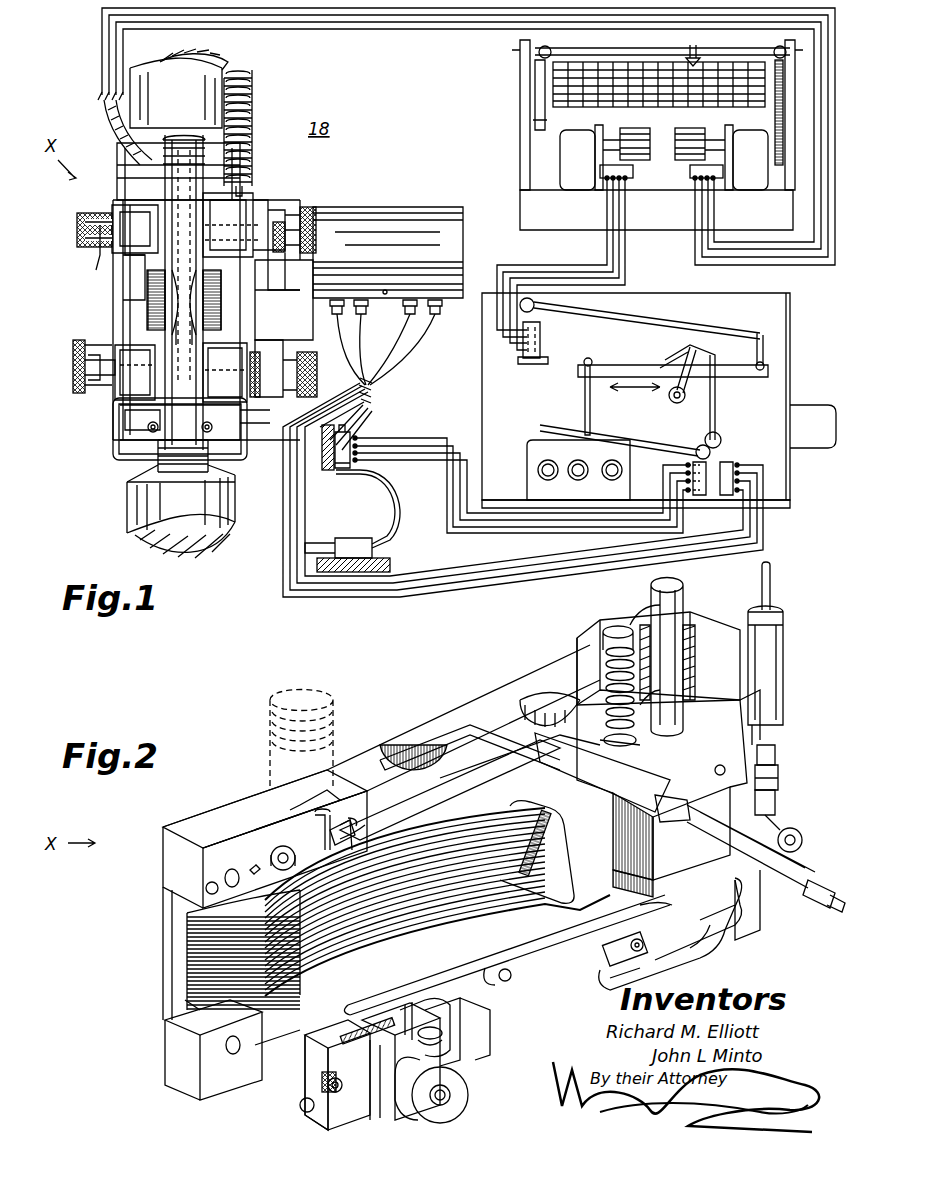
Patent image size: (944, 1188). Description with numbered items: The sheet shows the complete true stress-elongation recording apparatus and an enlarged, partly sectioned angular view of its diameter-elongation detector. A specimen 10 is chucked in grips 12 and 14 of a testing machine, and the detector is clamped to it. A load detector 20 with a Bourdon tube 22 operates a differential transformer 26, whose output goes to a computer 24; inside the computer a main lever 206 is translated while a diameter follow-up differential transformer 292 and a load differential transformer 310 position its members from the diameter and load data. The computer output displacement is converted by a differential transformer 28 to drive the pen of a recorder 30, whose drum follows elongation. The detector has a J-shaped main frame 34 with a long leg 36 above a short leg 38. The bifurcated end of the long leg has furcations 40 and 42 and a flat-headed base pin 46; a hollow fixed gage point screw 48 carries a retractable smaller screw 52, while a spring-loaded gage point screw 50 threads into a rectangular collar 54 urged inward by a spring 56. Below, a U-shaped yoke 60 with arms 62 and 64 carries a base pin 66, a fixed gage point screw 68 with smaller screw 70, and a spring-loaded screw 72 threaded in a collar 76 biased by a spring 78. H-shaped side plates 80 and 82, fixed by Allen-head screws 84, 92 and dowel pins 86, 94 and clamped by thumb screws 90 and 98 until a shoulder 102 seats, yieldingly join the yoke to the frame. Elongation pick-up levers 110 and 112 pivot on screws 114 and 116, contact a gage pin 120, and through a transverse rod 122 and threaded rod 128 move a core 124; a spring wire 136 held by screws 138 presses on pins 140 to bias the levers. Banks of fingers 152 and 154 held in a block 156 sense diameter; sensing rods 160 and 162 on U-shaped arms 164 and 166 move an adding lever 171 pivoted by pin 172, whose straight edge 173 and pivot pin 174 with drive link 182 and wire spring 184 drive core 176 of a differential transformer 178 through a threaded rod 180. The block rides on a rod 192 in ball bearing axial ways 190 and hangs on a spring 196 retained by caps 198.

In FIG. 1, the specimen 10 is at (165, 185).
In FIG. 1, the grip 12 is at (222, 64).
In FIG. 1, the grip 14 is at (210, 545).
In FIG. 1, the load detector 20 is at (338, 474).
In FIG. 1, the Bourdon tube 22 is at (395, 530).
In FIG. 1, the computer 24 is at (782, 302).
In FIG. 1, the differential transformer 26 is at (350, 432).
In FIG. 1, the differential transformer 28 is at (540, 330).
In FIG. 1, the recorder 30 is at (520, 103).
In FIG. 1, the main frame 34 is at (145, 172).
In FIG. 2, the main frame 34 is at (760, 742).
In FIG. 2, the long leg 36 is at (447, 717).
In FIG. 1, the short leg 38 is at (135, 450).
In FIG. 2, the short leg 38 is at (745, 925).
In FIG. 1, the furcation 40 is at (122, 250).
In FIG. 2, the furcation 40 is at (245, 798).
In FIG. 1, the furcation 42 is at (246, 210).
In FIG. 1, the base pin 46 is at (182, 294).
In FIG. 2, the base pin 46 is at (320, 815).
In FIG. 1, the fixed gage point screw 48 is at (145, 222).
In FIG. 2, the fixed gage point screw 48 is at (283, 846).
In FIG. 1, the spring-loaded gage point screw 50 is at (315, 215).
In FIG. 1, the smaller screw 52 is at (80, 230).
In FIG. 2, the smaller screw 52 is at (249, 875).
In FIG. 1, the rectangular collar 54 is at (210, 200).
In FIG. 1, the spring 56 is at (280, 218).
In FIG. 2, the U-shaped yoke 60 is at (243, 1115).
In FIG. 2, the arm 62 is at (183, 1095).
In FIG. 1, the arm 64 is at (225, 372).
In FIG. 2, the arm 64 is at (305, 1110).
In FIG. 1, the base pin 66 is at (177, 332).
In FIG. 1, the fixed gage point screw 68 is at (130, 380).
In FIG. 1, the smaller screw 70 is at (80, 378).
In FIG. 1, the spring-loaded gage point screw 72 is at (318, 375).
In FIG. 2, the spring-loaded gage point screw 72 is at (450, 1122).
In FIG. 1, the rectangular collar 76 is at (262, 400).
In FIG. 2, the rectangular collar 76 is at (372, 1118).
In FIG. 1, the spring 78 is at (275, 348).
In FIG. 2, the spring 78 is at (450, 1060).
In FIG. 1, the H-shaped side plate 80 is at (131, 277).
In FIG. 2, the H-shaped side plate 80 is at (163, 905).
In FIG. 1, the H-shaped side plate 82 is at (255, 290).
In FIG. 1, the Allen-head screws 84 is at (97, 255).
In FIG. 2, the Allen-head screws 84 is at (230, 870).
In FIG. 2, the dowel pins 86 is at (205, 888).
In FIG. 1, the knurled thumb screw 90 is at (75, 365).
In FIG. 1, the Allen-head screws 92 is at (277, 312).
In FIG. 2, the Allen-head screws 92 is at (225, 1045).
In FIG. 2, the dowel pins 94 is at (305, 1112).
In FIG. 1, the thumb screw 98 is at (287, 270).
In FIG. 2, the shoulder 102 is at (180, 1012).
In FIG. 1, the elongation pick-up lever 110 is at (142, 300).
In FIG. 1, the elongation pick-up lever 112 is at (225, 298).
In FIG. 2, the elongation pick-up lever 112 is at (522, 965).
In FIG. 1, the screw 114 is at (125, 425).
In FIG. 1, the screw 116 is at (240, 420).
In FIG. 2, the screw 116 is at (698, 920).
In FIG. 2, the gage pin 120 is at (470, 965).
In FIG. 2, the transverse rod 122 is at (798, 838).
In FIG. 2, the core 124 is at (783, 660).
In FIG. 2, the threaded rod 128 is at (775, 760).
In FIG. 2, the spring wire 136 is at (710, 950).
In FIG. 2, the screws 138 is at (620, 958).
In FIG. 2, the pins 140 is at (505, 982).
In FIG. 2, the bank of fingers 152 is at (187, 935).
In FIG. 2, the bank of fingers 154 is at (290, 1035).
In FIG. 2, the block 156 is at (778, 780).
In FIG. 2, the sensing rod 160 is at (318, 850).
In FIG. 2, the sensing rod 162 is at (375, 862).
In FIG. 2, the U-shaped arm 164 is at (357, 815).
In FIG. 2, the U-shaped arm 166 is at (600, 848).
In FIG. 2, the adding lever 171 is at (465, 755).
In FIG. 2, the pivot pin 172 is at (455, 760).
In FIG. 2, the straight edge 173 is at (395, 800).
In FIG. 2, the pivot pin 174 is at (600, 725).
In FIG. 2, the core 176 is at (776, 812).
In FIG. 1, the differential transformer 178 is at (418, 212).
In FIG. 2, the threaded rod 180 is at (690, 822).
In FIG. 2, the drive link 182 is at (690, 748).
In FIG. 2, the wire spring 184 is at (503, 745).
In FIG. 2, the ball bearing axial ways 190 is at (640, 620).
In FIG. 2, the rod 192 is at (684, 605).
In FIG. 2, the spring 196 is at (636, 749).
In FIG. 2, the caps 198 is at (610, 630).
In FIG. 1, the main lever 206 is at (640, 370).
In FIG. 1, the diameter follow-up differential transformer 292 is at (735, 465).
In FIG. 1, the differential transformer 310 is at (690, 462).